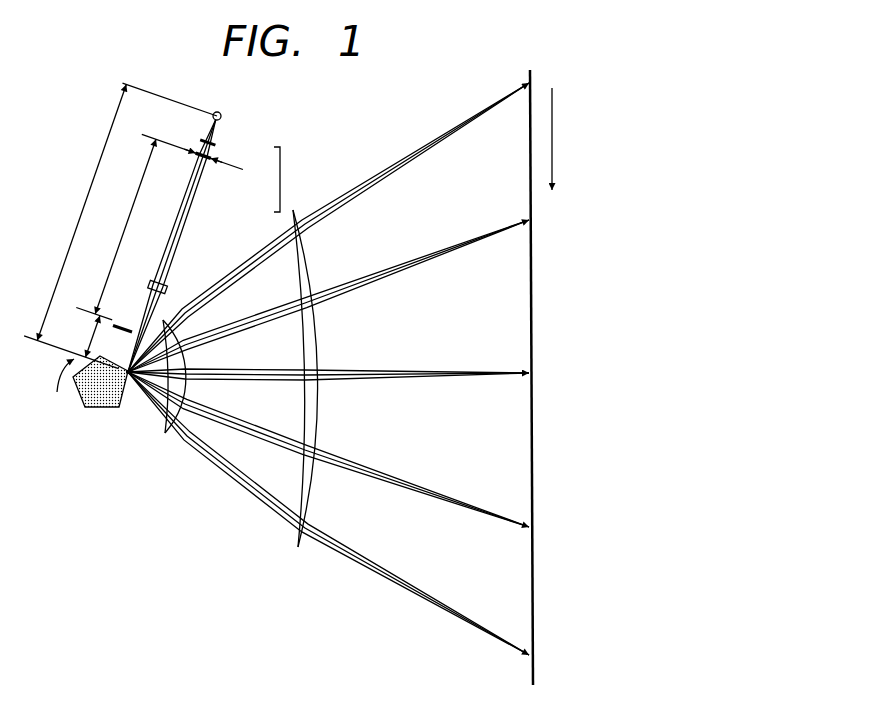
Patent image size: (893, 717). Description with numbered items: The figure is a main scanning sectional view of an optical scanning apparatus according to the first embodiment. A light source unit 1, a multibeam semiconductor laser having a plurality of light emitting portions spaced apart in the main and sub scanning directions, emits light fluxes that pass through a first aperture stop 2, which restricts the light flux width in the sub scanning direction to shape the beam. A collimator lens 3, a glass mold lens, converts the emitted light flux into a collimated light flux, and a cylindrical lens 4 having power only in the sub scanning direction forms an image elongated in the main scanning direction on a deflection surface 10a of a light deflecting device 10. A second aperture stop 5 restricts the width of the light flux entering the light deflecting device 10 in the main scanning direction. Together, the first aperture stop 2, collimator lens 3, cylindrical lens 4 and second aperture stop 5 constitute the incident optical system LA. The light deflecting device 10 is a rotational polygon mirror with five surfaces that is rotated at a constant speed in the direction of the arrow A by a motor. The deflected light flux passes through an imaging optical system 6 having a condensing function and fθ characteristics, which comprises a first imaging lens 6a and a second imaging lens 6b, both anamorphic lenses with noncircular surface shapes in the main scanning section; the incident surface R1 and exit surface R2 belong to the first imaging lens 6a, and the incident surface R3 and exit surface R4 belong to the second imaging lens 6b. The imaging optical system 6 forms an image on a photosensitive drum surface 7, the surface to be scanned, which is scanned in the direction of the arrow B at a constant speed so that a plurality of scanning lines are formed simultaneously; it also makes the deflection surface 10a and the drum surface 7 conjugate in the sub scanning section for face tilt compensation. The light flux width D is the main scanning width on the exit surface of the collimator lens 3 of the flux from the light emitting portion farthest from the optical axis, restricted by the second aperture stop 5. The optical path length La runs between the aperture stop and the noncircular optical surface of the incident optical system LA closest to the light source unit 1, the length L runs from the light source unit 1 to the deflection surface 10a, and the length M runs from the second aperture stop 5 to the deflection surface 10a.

The light source unit 1 is at (221, 112).
The first aperture stop 2 is at (216, 144).
The collimator lens 3 is at (212, 156).
The cylindrical lens 4 is at (166, 286).
The second aperture stop 5 is at (121, 330).
The imaging optical system 6 is at (261, 419).
The first imaging lens 6a is at (190, 457).
The second imaging lens 6b is at (346, 402).
The photosensitive drum surface 7 is at (529, 73).
The light deflecting device 10 is at (82, 404).
The deflection surface 10a is at (127, 380).
The incident surface of first imaging lens R1 is at (151, 422).
The exit surface of first imaging lens R2 is at (186, 393).
The incident surface of second imaging lens R3 is at (297, 262).
The exit surface of second imaging lens R4 is at (316, 338).
The rotation direction of light deflecting device A is at (56, 375).
The scanning direction B is at (552, 152).
The light flux width D is at (192, 162).
The optical path length from light source unit to deflection surface L is at (120, 226).
The optical path length from aperture stop to nearest noncircular surface La is at (116, 229).
The incident optical system LA is at (290, 179).
The optical path length from second aperture stop to deflection surface M is at (80, 337).